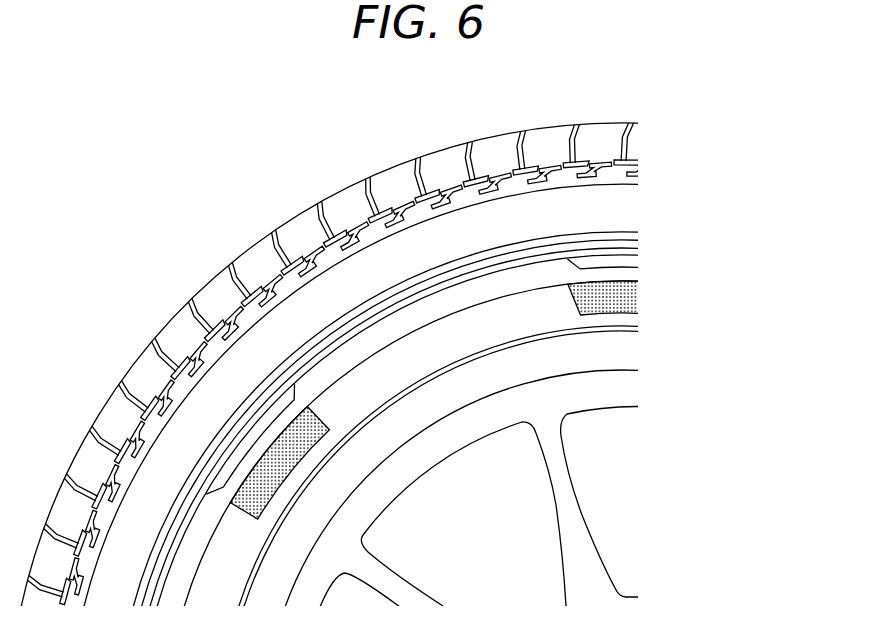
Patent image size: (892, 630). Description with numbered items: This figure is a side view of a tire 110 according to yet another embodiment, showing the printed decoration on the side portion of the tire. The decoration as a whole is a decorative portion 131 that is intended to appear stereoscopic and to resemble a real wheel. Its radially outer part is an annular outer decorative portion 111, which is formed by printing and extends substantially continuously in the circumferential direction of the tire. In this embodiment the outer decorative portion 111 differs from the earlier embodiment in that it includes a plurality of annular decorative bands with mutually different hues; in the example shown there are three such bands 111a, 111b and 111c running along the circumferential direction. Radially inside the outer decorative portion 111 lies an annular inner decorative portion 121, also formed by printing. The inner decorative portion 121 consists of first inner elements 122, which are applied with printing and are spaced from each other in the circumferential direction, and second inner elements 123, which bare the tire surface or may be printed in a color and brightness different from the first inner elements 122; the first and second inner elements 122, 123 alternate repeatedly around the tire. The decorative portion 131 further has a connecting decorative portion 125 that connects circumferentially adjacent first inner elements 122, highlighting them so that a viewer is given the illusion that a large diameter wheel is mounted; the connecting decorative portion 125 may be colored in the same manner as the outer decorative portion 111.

The tire 110 is at (207, 256).
The outer decorative portion 111 is at (733, 188).
The annular decorative band 111a is at (634, 248).
The annular decorative band 111b is at (634, 240).
The annular decorative band 111c is at (634, 231).
The inner decorative portion 121 is at (267, 450).
The first inner element 122 is at (622, 276).
The second inner element 123 is at (520, 316).
The connecting decorative portion 125 is at (428, 312).
The decorative portion 131 is at (798, 208).